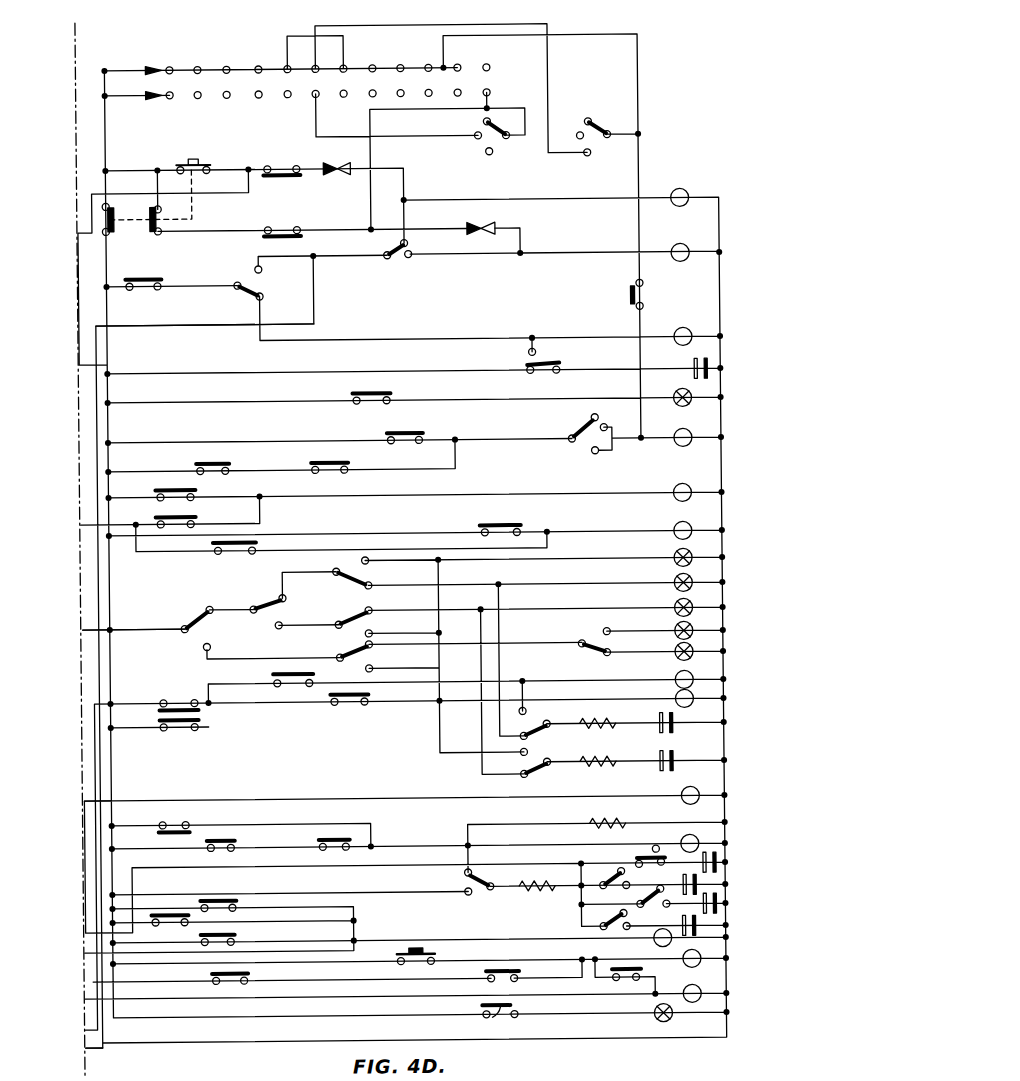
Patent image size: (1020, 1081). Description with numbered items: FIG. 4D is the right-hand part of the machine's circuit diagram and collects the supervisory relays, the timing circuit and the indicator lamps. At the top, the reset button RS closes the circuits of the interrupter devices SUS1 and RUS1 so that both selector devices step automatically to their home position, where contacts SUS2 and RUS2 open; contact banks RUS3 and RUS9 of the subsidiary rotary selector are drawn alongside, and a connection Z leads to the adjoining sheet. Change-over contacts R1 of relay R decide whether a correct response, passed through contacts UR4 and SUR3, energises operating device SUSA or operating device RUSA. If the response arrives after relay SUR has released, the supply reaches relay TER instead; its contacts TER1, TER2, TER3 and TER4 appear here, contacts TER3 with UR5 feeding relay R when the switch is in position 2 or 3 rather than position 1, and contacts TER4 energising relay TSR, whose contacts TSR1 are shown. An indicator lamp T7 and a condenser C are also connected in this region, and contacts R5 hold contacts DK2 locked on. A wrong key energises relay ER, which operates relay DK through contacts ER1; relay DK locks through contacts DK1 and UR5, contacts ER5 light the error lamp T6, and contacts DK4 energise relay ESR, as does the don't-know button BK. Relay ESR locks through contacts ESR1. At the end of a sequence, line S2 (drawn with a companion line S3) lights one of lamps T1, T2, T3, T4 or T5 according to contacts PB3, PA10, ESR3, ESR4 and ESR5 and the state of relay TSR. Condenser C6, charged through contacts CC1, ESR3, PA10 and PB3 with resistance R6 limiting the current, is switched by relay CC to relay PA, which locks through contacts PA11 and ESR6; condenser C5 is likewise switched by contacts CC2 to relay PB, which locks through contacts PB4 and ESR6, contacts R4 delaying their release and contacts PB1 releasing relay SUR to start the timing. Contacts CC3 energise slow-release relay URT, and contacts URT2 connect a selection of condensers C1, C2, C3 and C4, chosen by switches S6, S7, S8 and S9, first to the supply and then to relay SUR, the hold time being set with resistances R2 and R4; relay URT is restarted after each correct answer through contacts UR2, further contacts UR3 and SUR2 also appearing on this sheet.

The RUS3 relay contacts RUS3 is at (328, 57).
The RUS9 relay contacts RUS9 is at (326, 107).
The reset button RS is at (157, 191).
The contacts of selector bank SUS2 is at (286, 159).
The interrupter SUS1 is at (341, 171).
The contacts of selector RUS RUS2 is at (282, 221).
The interrupter RUS1 is at (477, 217).
The switch position 1 is at (473, 117).
The switch position 2 is at (465, 150).
The switch position 3 is at (492, 163).
The operating device SUSA is at (682, 209).
The operating device RUSA is at (682, 264).
The change-over contacts R1 is at (395, 263).
The contacts of relay UR UR4 is at (140, 273).
The contacts of relay SUR SUR3 is at (229, 280).
The Z connection line Z is at (213, 324).
The resistance R5 is at (630, 296).
The TER2 contact TER2 is at (598, 644).
The relay TER is at (689, 326).
The capacitor C is at (697, 364).
The TER1 contact TER1 is at (400, 390).
The lamp T7 is at (678, 395).
The contacts of relay DK DK2 is at (404, 426).
The relay R is at (686, 449).
The contacts of relay DK DK4 is at (187, 462).
The contacts of relay UR UR5 is at (222, 1028).
The contacts of relay TER TER3 is at (355, 460).
The relay ESR is at (675, 492).
The contacts of relay ESR ESR1 is at (203, 509).
The contacts of relay TER TER4 is at (474, 526).
The relay TSR is at (677, 529).
The TSR1 contact TSR1 is at (234, 561).
The indicator light T5 is at (675, 556).
The contacts of relay ESR ESR3 is at (332, 578).
The indicator light T4 is at (675, 581).
The contacts of relay PA PA10 is at (256, 602).
The indicator light T3 is at (675, 606).
The contacts of relay ESR ESR4 is at (341, 636).
The indicator light T2 is at (693, 627).
The indicator line S2 is at (85, 628).
The contacts of relay PB PB3 is at (190, 630).
The contacts of relay PA PA11 is at (274, 671).
The contacts of relay ESR ESR5 is at (383, 656).
The indicator light T1 is at (693, 652).
The relay PA is at (692, 679).
The relay PB is at (692, 700).
The resistance R4 is at (515, 892).
The contacts of relay PB PB4 is at (350, 711).
The resistance R6 is at (606, 730).
The condenser C6 is at (673, 733).
The contacts of relay ESR ESR6 is at (174, 740).
The contacts of relay CC CC1 is at (527, 741).
The contacts of relay CC CC2 is at (550, 774).
The condenser C5 is at (662, 768).
The relay CC is at (692, 793).
The S3 connection S3 is at (114, 798).
The contacts of relay PB PB1 is at (164, 819).
The resistance R2 is at (588, 820).
The switch S6 is at (650, 845).
The relay SUR is at (696, 840).
The UR3 contact UR3 is at (240, 822).
The SUR2 contact SUR2 is at (360, 822).
The condenser C4 is at (714, 858).
The contacts of relay URT URT2 is at (463, 889).
The switch S7 is at (593, 886).
The condenser C3 is at (700, 882).
The contacts of relay UR UR2 is at (172, 885).
The contacts of relay CC CC3 is at (233, 884).
The switch S8 is at (632, 905).
The condenser C2 is at (716, 900).
The switch S9 is at (596, 925).
The condenser C1 is at (697, 932).
The press button BK is at (411, 948).
The contacts of relay DK DK1 is at (488, 969).
The relay URT is at (664, 949).
The relay DK is at (698, 958).
The relay ER is at (698, 994).
The contacts of relay ER ER5 is at (478, 1018).
The contacts of relay ER ER1 is at (620, 980).
The indicator light T6 is at (662, 1024).